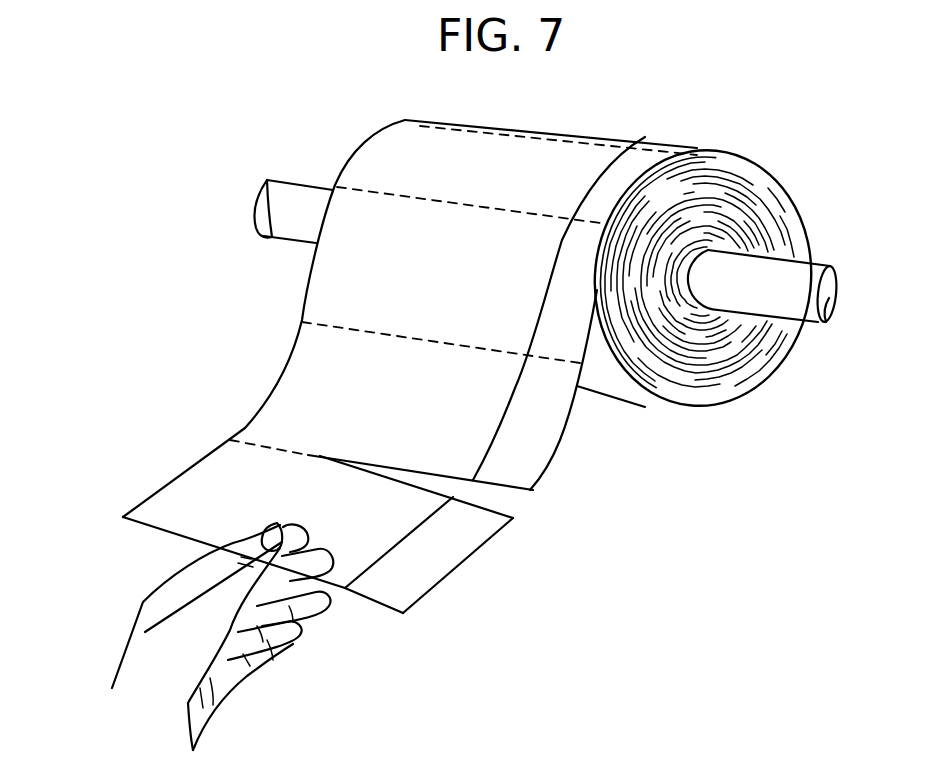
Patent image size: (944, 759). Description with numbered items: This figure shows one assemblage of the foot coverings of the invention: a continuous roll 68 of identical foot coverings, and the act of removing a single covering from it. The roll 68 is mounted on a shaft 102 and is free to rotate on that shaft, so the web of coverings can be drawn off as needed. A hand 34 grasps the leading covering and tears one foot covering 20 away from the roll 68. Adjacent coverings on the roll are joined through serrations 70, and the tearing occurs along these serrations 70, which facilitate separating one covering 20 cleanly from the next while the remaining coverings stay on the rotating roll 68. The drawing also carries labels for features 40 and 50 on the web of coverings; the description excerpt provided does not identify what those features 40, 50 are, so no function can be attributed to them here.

The foot covering 20 is at (487, 122).
The serrations 70 is at (502, 133).
The strip 40 is at (585, 178).
The edge 50 is at (560, 440).
The continuous roll 68 is at (740, 182).
The shaft 102 is at (806, 307).
The hand 34 is at (160, 670).